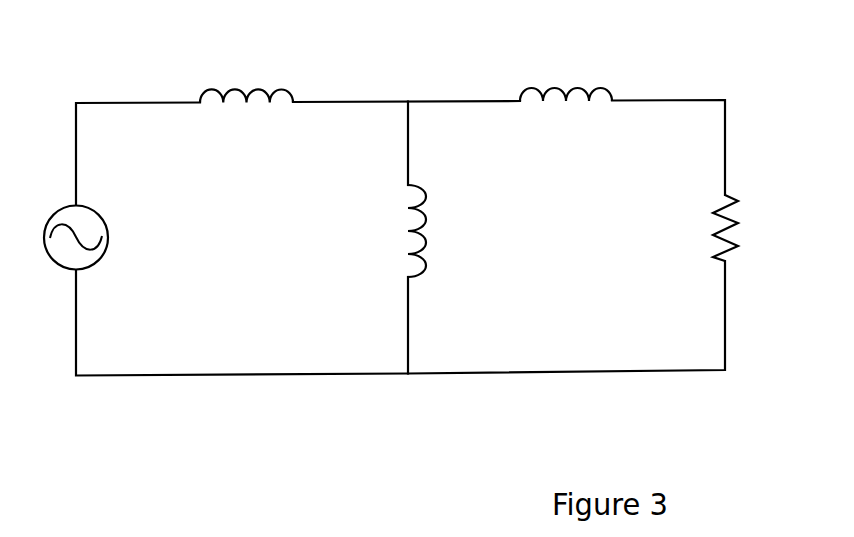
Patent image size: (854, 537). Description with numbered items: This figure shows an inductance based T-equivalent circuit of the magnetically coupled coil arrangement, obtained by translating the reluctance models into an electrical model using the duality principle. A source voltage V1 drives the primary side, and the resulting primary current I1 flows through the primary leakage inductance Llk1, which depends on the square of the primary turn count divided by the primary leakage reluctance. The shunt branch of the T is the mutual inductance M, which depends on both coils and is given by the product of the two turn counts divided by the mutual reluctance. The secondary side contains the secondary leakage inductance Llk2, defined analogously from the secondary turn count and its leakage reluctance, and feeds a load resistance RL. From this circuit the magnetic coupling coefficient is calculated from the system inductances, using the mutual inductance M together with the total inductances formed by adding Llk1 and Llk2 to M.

The source voltage V1 is at (98, 238).
The primary current I1 is at (228, 133).
The primary leakage inductance Llk1 is at (245, 77).
The secondary leakage inductance Llk2 is at (562, 74).
The mutual inductance M is at (448, 231).
The load resistance RL is at (705, 230).